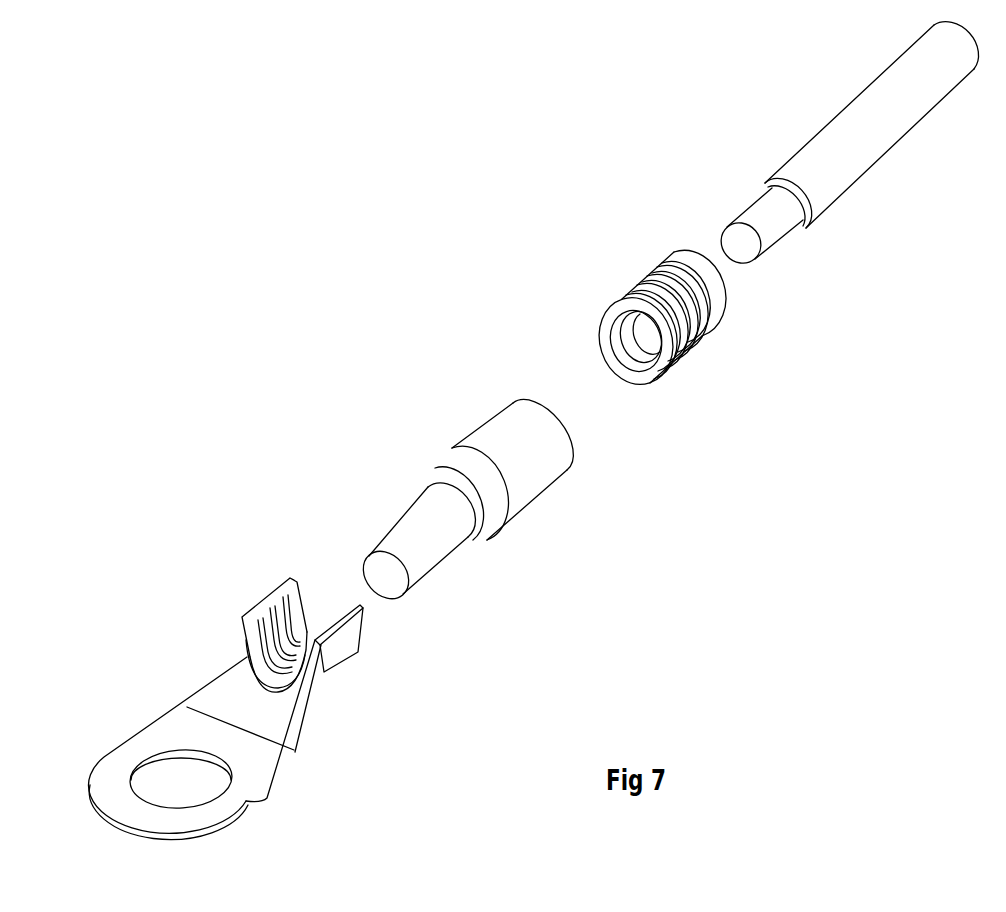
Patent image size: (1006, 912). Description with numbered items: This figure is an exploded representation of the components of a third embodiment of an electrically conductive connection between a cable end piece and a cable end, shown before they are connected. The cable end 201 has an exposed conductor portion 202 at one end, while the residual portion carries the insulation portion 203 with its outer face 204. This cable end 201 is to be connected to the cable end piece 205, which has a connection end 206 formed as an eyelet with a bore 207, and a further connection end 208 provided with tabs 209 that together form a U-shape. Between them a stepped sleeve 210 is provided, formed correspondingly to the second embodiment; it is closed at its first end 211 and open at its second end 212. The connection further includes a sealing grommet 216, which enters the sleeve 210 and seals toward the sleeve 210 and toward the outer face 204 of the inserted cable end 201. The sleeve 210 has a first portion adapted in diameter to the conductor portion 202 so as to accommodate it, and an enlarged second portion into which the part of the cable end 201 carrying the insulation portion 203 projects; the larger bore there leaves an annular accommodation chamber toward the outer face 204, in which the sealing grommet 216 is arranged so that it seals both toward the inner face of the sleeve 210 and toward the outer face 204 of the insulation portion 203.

The cable end 201 is at (846, 171).
The conductor portion 202 is at (775, 233).
The insulation portion 203 is at (803, 227).
The outer face 204 is at (884, 143).
The sealing grommet 216 is at (631, 260).
The sleeve 210 is at (502, 511).
The first end 211 is at (400, 592).
The second end 212 is at (568, 463).
The cable end piece 205 is at (256, 694).
The connection end 206 is at (268, 772).
The bore 207 is at (218, 762).
The connection end 208 is at (300, 731).
The tabs 209 is at (265, 596).